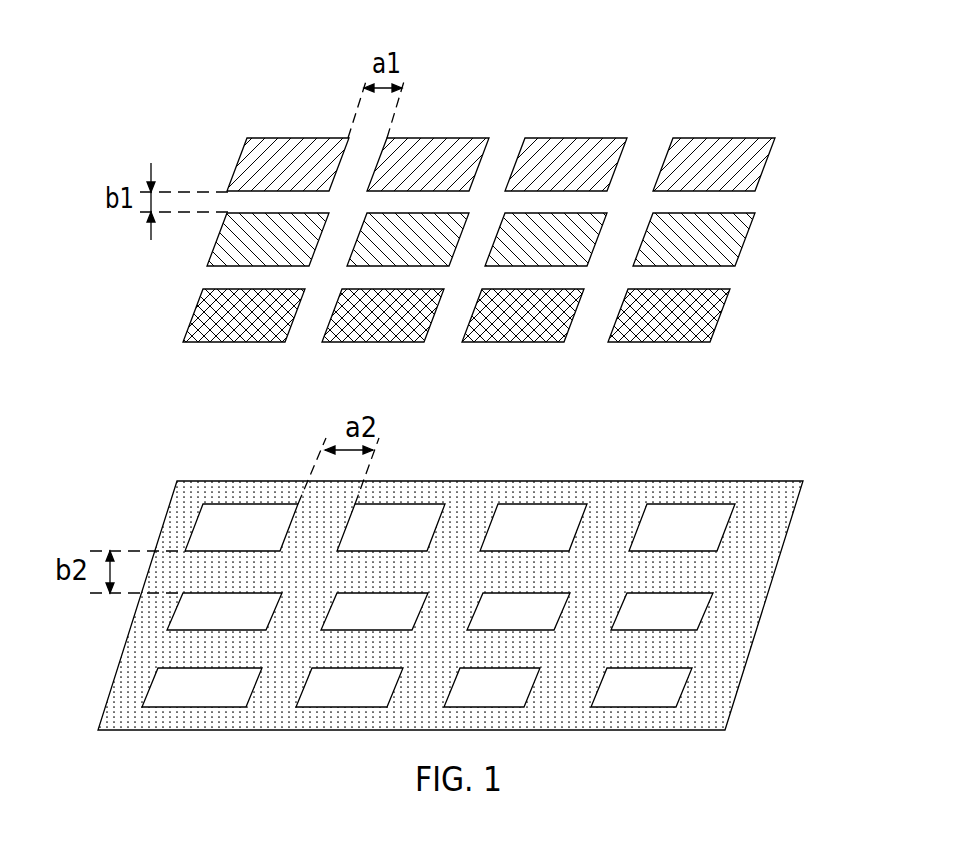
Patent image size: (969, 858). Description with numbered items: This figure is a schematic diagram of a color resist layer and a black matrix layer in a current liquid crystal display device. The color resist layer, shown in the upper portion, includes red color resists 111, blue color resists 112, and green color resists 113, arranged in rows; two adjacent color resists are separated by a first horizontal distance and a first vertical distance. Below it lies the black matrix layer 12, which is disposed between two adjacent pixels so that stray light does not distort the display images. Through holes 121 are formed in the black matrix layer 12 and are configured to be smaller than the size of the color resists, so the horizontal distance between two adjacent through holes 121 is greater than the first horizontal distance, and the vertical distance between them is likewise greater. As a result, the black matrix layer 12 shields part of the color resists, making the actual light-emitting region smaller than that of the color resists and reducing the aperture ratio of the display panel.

The red color resists 111 is at (743, 170).
The blue color resists 112 is at (725, 248).
The green color resists 113 is at (687, 323).
The black matrix layer 12 is at (757, 550).
The through holes 121 is at (700, 518).